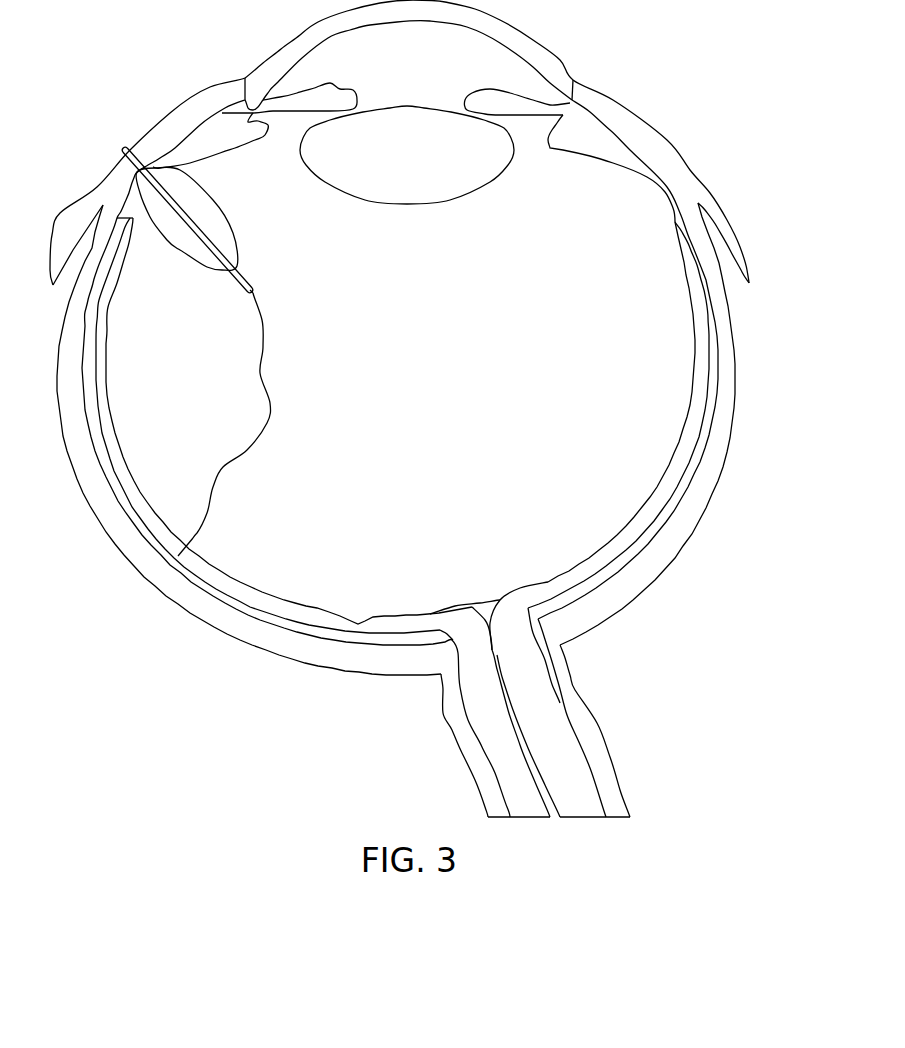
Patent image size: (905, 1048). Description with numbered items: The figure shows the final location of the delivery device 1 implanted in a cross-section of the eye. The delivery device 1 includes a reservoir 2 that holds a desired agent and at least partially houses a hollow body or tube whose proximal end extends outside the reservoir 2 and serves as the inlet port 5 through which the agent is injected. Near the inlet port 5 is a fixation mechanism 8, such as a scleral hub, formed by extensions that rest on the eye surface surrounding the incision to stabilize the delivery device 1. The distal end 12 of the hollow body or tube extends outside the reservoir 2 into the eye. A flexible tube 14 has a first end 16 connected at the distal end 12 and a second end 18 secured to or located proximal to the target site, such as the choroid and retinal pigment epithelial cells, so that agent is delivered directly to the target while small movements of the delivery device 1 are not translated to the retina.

The delivery device 1 is at (168, 276).
The reservoir 2 is at (207, 218).
The inlet port 5 is at (196, 193).
The fixation mechanism 8 is at (129, 146).
The distal end of the hollow body or tube 12 is at (251, 286).
The tube 14 is at (270, 413).
The first end of the tube 16 is at (254, 293).
The second end of the tube 18 is at (178, 556).